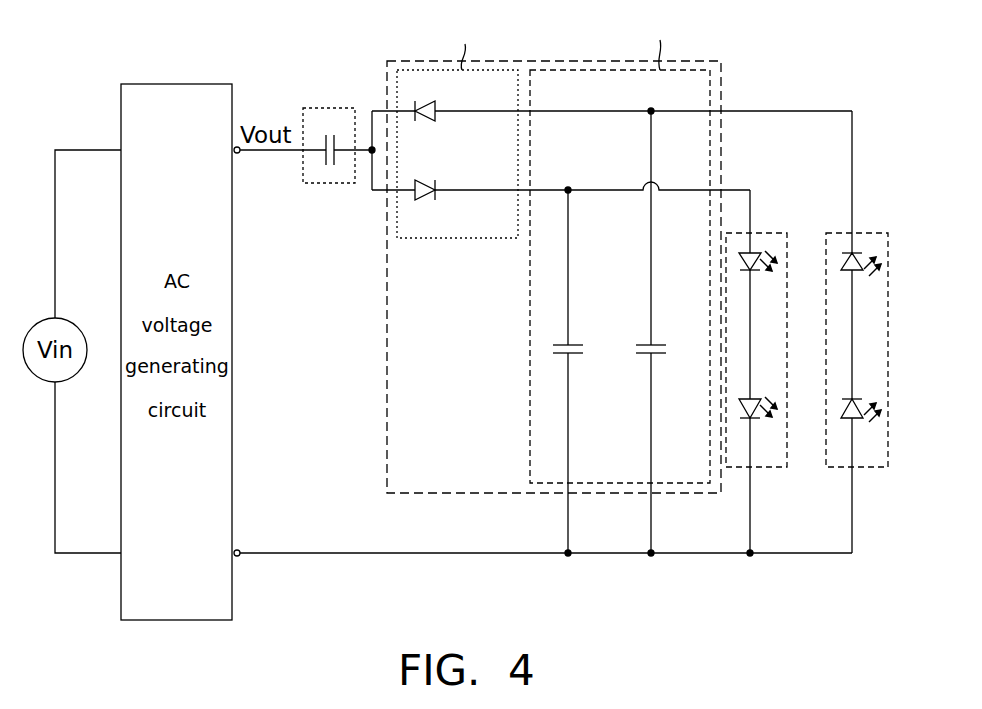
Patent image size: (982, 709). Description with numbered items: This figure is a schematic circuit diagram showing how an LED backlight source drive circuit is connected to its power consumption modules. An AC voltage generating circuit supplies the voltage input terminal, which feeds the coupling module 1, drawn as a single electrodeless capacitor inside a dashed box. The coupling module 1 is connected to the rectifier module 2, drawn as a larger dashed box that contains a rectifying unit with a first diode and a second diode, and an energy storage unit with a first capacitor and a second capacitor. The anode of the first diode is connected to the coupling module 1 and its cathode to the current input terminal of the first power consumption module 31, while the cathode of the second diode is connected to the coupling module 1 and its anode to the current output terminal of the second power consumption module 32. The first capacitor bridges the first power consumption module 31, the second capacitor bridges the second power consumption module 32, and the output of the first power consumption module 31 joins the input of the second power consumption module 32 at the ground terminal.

The coupling module 1 is at (320, 108).
The rectifier module 2 is at (586, 61).
The first power consumption module 31 is at (778, 467).
The second power consumption module 32 is at (863, 467).